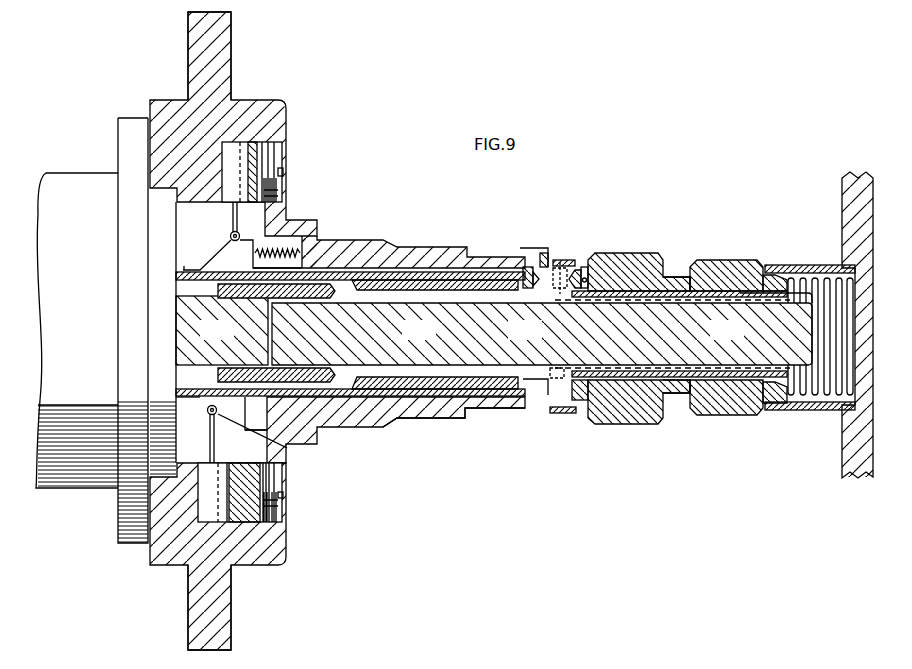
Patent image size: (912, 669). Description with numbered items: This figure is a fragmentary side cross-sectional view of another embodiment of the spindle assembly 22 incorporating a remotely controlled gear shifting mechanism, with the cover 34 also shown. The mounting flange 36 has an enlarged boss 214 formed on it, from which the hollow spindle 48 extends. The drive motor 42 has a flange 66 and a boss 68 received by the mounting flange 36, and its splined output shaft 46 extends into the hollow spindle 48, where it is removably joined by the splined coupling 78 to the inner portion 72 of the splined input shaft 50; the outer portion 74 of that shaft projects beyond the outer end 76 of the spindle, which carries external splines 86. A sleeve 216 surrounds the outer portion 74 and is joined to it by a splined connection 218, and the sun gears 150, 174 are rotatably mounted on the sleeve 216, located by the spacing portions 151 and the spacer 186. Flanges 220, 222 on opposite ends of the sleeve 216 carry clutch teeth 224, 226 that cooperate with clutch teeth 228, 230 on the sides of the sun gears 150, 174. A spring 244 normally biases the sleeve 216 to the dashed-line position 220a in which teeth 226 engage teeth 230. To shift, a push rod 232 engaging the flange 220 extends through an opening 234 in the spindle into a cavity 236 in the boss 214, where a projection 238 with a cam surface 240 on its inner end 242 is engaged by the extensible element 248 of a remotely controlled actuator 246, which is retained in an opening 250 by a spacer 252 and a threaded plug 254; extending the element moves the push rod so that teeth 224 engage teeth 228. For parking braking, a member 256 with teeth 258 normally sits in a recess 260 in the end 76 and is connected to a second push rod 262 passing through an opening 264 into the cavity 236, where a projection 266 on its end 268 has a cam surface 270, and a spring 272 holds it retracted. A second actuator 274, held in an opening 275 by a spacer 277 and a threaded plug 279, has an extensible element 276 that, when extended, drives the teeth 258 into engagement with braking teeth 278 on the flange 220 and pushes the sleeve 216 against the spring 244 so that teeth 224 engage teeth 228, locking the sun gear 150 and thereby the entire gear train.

The spindle assembly 22 is at (332, 184).
The cover 34 is at (858, 482).
The mounting flange 36 is at (286, 20).
The drive motor 42 is at (88, 316).
The splined output shaft 46 is at (225, 339).
The hollow spindle 48 is at (443, 242).
The splined input shaft 50 is at (534, 339).
The motor flange 66 is at (131, 336).
The motor boss 68 is at (173, 238).
The inner portion of input shaft 72 is at (427, 339).
The outer portion of input shaft 74 is at (734, 339).
The outer end of hollow spindle 76 is at (575, 270).
The splined coupling 78 is at (318, 373).
The external splines 86 is at (489, 254).
The sun gear 150 is at (630, 412).
The spacing portions 151 is at (676, 276).
The sun gear 174 is at (720, 412).
The spacer 186 is at (824, 211).
The enlarged boss 214 is at (286, 130).
The sleeve 216 is at (672, 386).
The splined connection 218 is at (622, 300).
The flange of sleeve 220 is at (570, 414).
The shifted position of flange 220a is at (566, 262).
The flange of sleeve 222 is at (790, 410).
The clutch teeth 224 is at (592, 280).
The clutch teeth 226 is at (773, 274).
The clutch teeth 228 is at (585, 402).
The clutch teeth 230 is at (766, 404).
The push rod 232 is at (355, 400).
The opening 234 is at (440, 408).
The cavity 236 is at (206, 434).
The projection 238 is at (288, 449).
The cam surface 240 is at (240, 420).
The inner end of push rod 242 is at (198, 399).
The spring 244 is at (827, 280).
The remotely controlled actuator 246 is at (233, 523).
The extensible element 248 is at (205, 442).
The opening 250 is at (250, 505).
The spacer 252 is at (251, 523).
The threaded plug 254 is at (286, 510).
The brake member 256 is at (528, 265).
The teeth 258 is at (543, 260).
The recess 260 is at (559, 266).
The push rod 262 is at (358, 266).
The opening 264 is at (412, 284).
The projection 266 is at (286, 248).
The end of push rod 268 is at (185, 272).
The cam surface 270 is at (214, 259).
The spring 272 is at (307, 250).
The remotely controlled actuator 274 is at (234, 150).
The opening 275 is at (256, 150).
The extensible element 276 is at (230, 215).
The spacer 277 is at (270, 142).
The braking teeth 278 is at (585, 270).
The threaded plug 279 is at (283, 172).